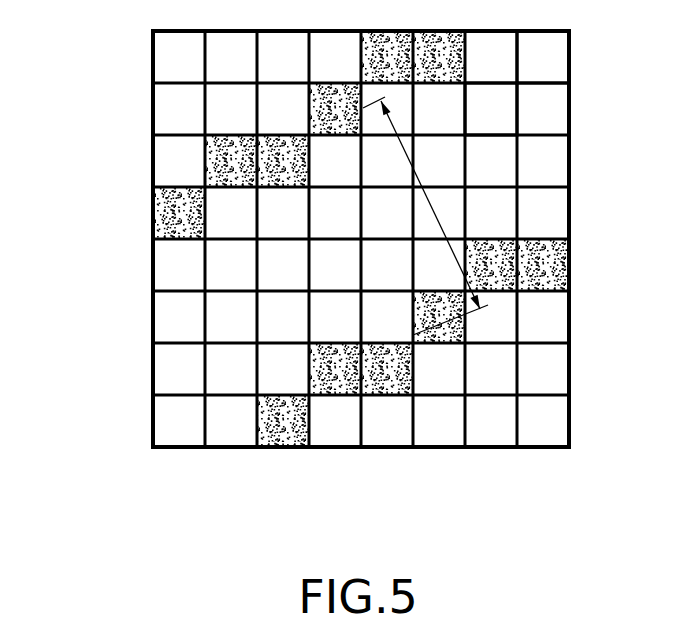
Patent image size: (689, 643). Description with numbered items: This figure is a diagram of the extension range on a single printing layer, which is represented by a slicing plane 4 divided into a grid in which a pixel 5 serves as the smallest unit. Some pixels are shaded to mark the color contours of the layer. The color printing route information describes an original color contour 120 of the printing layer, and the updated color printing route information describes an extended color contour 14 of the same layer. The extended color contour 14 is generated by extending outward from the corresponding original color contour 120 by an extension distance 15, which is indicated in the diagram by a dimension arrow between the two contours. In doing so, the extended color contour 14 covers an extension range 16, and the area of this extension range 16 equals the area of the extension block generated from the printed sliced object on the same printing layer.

The slicing plane 4 is at (568, 420).
The pixel 5 is at (547, 56).
The extension range 16 is at (505, 122).
The extension distance 15 is at (435, 213).
The original color contour 120 is at (150, 215).
The extended color contour 14 is at (277, 447).